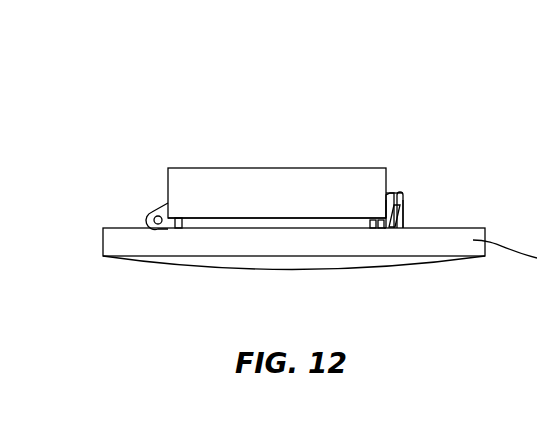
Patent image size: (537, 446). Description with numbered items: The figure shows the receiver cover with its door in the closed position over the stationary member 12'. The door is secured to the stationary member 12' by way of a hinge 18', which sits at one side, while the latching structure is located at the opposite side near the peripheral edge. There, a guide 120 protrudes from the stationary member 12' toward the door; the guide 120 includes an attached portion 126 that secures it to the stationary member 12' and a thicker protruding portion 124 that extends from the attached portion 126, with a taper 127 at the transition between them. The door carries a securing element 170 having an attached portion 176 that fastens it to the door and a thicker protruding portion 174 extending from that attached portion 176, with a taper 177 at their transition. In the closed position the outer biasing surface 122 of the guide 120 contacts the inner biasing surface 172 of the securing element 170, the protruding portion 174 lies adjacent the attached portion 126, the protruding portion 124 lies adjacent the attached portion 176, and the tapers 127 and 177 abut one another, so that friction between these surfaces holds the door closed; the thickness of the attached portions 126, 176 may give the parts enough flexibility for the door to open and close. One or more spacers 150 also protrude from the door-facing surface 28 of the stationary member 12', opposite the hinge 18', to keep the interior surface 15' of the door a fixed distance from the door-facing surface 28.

The stationary member 12' is at (253, 173).
The interior surface 15' is at (277, 174).
The hinge 18' is at (117, 200).
The door-facing surface 28 is at (208, 218).
The spacers 150 is at (370, 221).
The protruding portion 124 is at (378, 235).
The taper 127 is at (386, 229).
The inner biasing surface 172 is at (386, 210).
The securing element 170 is at (401, 236).
The outer biasing surface 122 is at (410, 188).
The guide 120 is at (395, 181).
The attached portion 126 is at (377, 189).
The protruding portion 174 is at (413, 198).
The taper 177 is at (406, 213).
The attached portion 176 is at (413, 218).